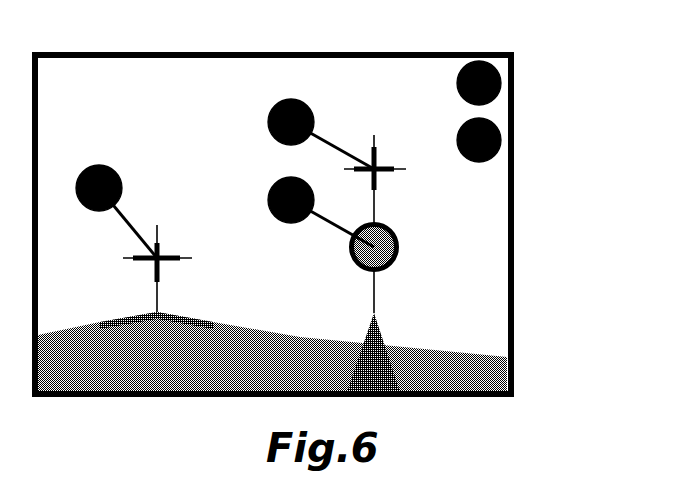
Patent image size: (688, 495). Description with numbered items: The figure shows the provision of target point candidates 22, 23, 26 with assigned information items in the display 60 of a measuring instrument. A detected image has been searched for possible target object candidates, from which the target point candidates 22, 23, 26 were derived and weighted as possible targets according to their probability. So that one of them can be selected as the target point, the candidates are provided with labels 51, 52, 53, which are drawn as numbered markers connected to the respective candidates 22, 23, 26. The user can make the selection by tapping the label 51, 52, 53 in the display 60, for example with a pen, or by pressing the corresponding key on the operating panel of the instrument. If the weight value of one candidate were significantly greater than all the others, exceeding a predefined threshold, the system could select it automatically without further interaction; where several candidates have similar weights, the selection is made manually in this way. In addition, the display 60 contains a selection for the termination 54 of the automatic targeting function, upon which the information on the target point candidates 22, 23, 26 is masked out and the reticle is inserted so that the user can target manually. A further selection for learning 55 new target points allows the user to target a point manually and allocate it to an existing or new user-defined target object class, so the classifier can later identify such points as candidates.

The display 60 is at (125, 53).
The label 51 is at (280, 100).
The label 52 is at (268, 193).
The label 53 is at (103, 165).
The termination 54 is at (499, 73).
The learning 55 is at (500, 130).
The target point candidate 22 is at (379, 182).
The target point candidate 23 is at (388, 270).
The target point candidate 26 is at (160, 267).